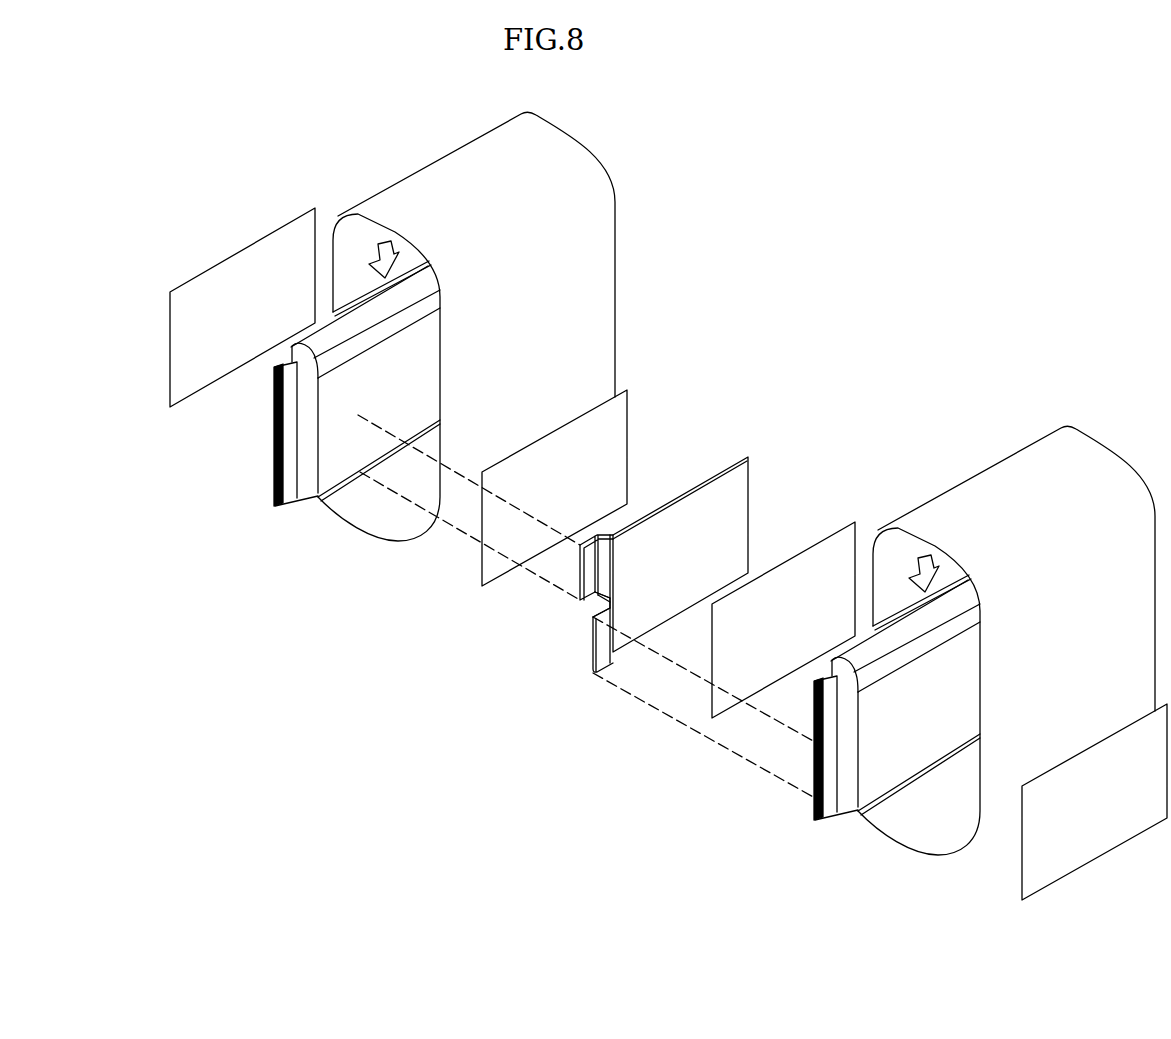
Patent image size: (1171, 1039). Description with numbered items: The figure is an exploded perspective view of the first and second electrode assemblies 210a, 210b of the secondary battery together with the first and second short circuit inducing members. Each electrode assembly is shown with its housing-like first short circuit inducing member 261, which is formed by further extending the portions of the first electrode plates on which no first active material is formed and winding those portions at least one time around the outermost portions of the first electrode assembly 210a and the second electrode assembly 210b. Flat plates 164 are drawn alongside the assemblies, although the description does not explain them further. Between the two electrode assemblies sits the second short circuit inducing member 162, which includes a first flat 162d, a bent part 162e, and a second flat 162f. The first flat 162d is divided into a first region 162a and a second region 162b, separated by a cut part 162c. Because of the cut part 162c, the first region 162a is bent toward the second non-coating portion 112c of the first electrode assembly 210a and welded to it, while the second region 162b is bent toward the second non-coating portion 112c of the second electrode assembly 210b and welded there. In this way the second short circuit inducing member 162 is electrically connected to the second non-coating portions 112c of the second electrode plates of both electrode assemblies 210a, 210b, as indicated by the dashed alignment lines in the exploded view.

The first short circuit inducing member 261 is at (568, 144).
The plate 164 is at (298, 227).
The second electrode assembly 210b is at (334, 462).
The first electrode assembly 210a is at (874, 775).
The second non-coating portion 112c is at (289, 507).
The second short circuit inducing member 162 is at (633, 545).
The second flat 162f is at (748, 485).
The first flat 162d is at (535, 608).
The first region 162a is at (598, 656).
The second region 162b is at (580, 586).
The cut part 162c is at (593, 608).
The bent part 162e is at (610, 573).